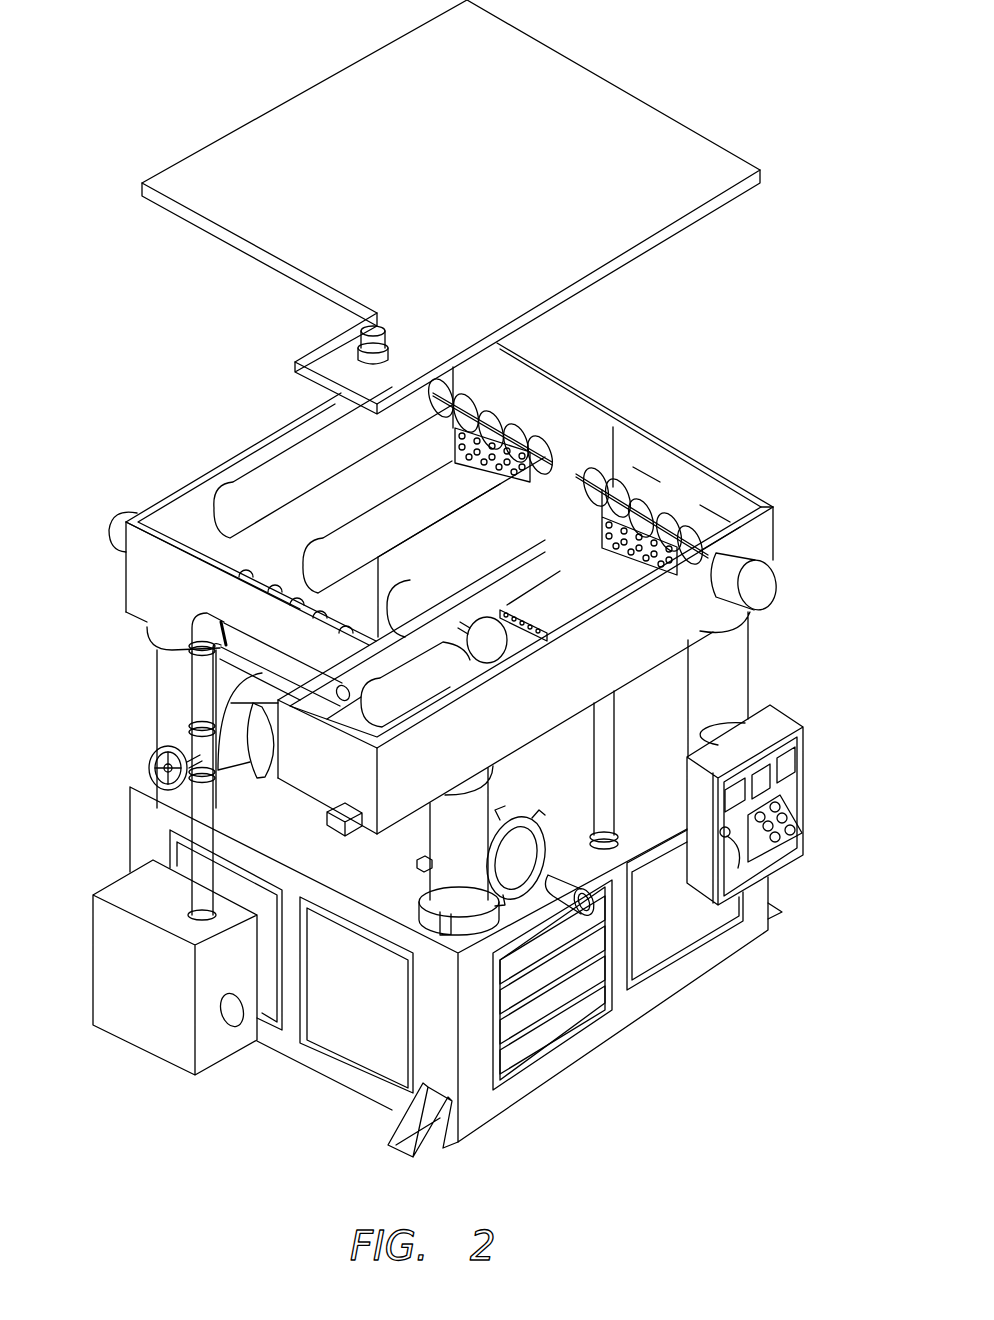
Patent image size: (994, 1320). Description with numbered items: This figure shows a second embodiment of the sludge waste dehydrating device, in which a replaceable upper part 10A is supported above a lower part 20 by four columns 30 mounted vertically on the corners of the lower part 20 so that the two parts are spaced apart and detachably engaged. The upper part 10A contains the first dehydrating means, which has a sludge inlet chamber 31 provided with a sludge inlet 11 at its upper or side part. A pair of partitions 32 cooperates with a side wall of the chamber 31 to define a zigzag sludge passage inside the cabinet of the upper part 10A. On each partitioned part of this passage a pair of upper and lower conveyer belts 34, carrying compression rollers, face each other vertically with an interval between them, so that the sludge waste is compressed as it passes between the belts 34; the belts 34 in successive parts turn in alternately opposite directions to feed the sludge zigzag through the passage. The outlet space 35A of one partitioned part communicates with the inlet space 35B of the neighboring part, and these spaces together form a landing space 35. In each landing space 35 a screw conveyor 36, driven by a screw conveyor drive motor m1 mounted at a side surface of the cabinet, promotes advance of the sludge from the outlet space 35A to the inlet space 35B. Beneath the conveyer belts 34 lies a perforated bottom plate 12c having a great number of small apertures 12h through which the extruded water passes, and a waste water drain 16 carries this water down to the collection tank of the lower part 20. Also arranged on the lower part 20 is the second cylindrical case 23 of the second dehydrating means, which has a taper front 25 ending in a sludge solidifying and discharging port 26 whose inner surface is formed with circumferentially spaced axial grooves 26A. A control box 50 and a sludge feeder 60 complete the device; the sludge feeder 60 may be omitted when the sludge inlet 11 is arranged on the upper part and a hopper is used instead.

The upper part 10A is at (651, 371).
The partitions 32 is at (594, 447).
The conveyer belts 34 is at (383, 520).
The landing space 35 is at (798, 405).
The outlet space 35A is at (690, 500).
The inlet space 35B is at (633, 467).
The screw conveyor 36 is at (760, 498).
The perforated bottom plate 12c is at (748, 540).
The screw conveyor drive motor m1 is at (765, 585).
The small apertures 12h is at (656, 568).
The columns 30 is at (167, 694).
The sludge inlet chamber 31 is at (285, 697).
The sludge inlet 11 is at (349, 690).
The second cylindrical case 23 is at (407, 838).
The waste water drain 16 is at (607, 760).
The taper front 25 is at (528, 855).
The sludge solidifying and discharging port 26 is at (565, 883).
The axial grooves 26A is at (589, 916).
The lower part 20 is at (624, 1013).
The control box 50 is at (797, 778).
The sludge feeder 60 is at (143, 1027).